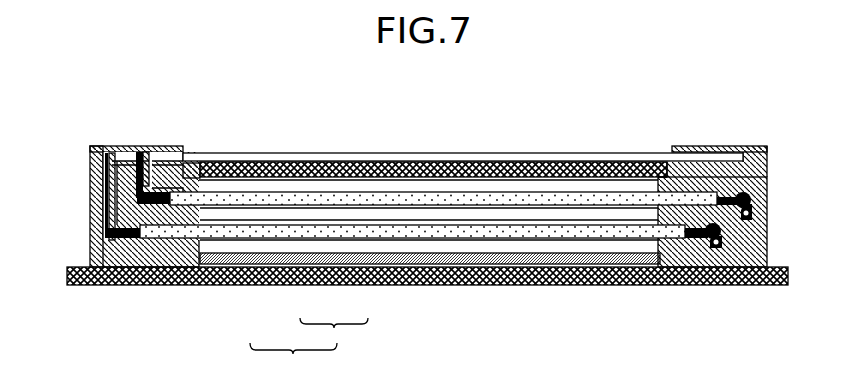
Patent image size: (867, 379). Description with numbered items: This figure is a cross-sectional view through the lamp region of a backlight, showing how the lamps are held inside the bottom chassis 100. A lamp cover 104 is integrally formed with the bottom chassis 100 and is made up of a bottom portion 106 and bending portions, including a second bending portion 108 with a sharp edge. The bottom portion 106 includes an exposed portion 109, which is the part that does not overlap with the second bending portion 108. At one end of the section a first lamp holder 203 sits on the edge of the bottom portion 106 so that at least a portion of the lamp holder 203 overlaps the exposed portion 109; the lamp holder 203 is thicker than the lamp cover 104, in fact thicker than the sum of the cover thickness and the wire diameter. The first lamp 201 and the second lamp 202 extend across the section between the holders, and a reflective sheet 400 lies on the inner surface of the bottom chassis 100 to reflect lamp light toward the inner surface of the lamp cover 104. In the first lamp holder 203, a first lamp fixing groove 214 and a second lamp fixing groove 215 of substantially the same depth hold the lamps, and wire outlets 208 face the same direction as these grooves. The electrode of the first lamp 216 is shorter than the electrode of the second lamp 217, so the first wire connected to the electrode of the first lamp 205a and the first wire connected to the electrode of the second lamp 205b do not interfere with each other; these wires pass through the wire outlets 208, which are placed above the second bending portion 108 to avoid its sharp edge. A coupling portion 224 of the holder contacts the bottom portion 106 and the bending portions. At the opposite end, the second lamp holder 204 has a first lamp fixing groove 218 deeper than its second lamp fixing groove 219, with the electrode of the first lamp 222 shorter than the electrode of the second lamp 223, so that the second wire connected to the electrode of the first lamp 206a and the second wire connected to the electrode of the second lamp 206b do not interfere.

The bottom chassis 100 is at (293, 359).
The lamp cover 104 is at (334, 333).
The bottom portion 106 is at (373, 286).
The second bending portion 108 is at (305, 180).
The exposed portion 109 is at (193, 285).
The first lamp 201 is at (467, 198).
The second lamp 202 is at (543, 230).
The first lamp holder 203 is at (95, 252).
The second lamp holder 204 is at (753, 238).
The first wire connected to the electrode of the first lamp 205a is at (137, 155).
The first wire connected to the electrode of the second lamp 205b is at (97, 181).
The second wire connected to the electrode of the first lamp 206a is at (757, 210).
The second wire connected to the electrode of the second lamp 206b is at (723, 285).
The wire outlets 208 is at (168, 160).
The first lamp fixing groove 214 is at (187, 163).
The second lamp fixing groove 215 is at (160, 285).
The electrode of the first lamp 216 is at (140, 155).
The electrode of the second lamp 217 is at (122, 285).
The first lamp fixing groove 218 is at (673, 148).
The second lamp fixing groove 219 is at (668, 285).
The electrode of the first lamp 222 is at (765, 183).
The electrode of the second lamp 223 is at (692, 285).
The coupling portion 224 is at (212, 163).
The reflective sheet 400 is at (437, 257).